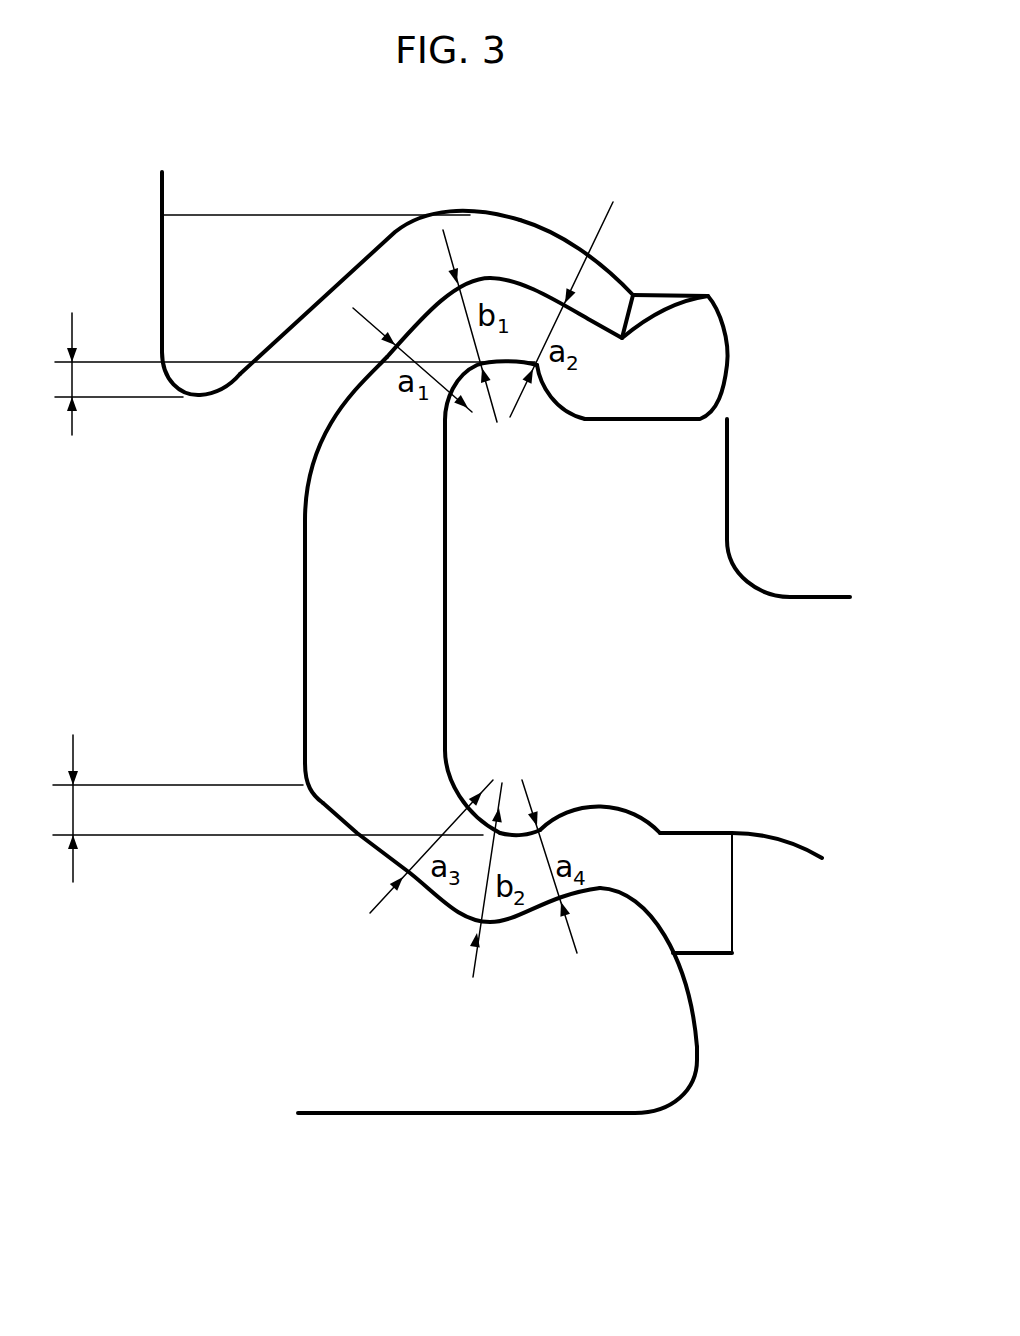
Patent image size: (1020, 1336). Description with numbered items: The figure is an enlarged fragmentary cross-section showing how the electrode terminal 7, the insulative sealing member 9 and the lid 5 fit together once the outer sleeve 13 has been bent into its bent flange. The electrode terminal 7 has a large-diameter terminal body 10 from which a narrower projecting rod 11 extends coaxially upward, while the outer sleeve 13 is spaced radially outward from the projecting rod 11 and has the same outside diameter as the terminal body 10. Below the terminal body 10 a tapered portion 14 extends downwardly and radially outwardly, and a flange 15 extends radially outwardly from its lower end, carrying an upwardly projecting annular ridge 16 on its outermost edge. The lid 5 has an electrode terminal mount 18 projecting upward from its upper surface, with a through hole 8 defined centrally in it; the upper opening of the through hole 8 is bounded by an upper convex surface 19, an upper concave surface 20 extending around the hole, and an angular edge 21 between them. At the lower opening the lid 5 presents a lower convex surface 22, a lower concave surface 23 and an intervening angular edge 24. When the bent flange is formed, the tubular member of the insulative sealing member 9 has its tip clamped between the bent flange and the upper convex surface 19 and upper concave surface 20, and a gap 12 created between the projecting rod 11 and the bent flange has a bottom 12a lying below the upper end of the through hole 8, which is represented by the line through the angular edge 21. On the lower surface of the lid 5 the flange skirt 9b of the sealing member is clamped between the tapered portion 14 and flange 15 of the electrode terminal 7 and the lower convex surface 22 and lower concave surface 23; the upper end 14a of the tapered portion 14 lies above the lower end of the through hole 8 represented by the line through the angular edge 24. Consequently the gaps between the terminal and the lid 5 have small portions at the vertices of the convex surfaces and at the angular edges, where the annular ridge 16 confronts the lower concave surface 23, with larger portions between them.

The lid 5 is at (591, 742).
The electrode terminal 7 is at (411, 537).
The through hole 8 is at (473, 585).
The insulative sealing member 9 is at (696, 357).
The flange skirt 9b is at (741, 899).
The terminal body 10 is at (299, 560).
The projecting rod 11 is at (198, 262).
The gap 12 is at (377, 258).
The bottom of the gap 12a is at (221, 400).
The outer sleeve 13 is at (561, 257).
The tapered portion 14 is at (460, 862).
The upper end of the tapered portion 14a is at (269, 852).
The flange 15 is at (497, 1118).
The annular ridge 16 is at (691, 955).
The electrode terminal mount 18 is at (806, 497).
The upper convex surface 19 is at (481, 368).
The upper concave surface 20 is at (563, 425).
The angular edge 21 is at (661, 336).
The lower convex surface 22 is at (471, 775).
The lower concave surface 23 is at (600, 786).
The angular edge 24 is at (525, 911).